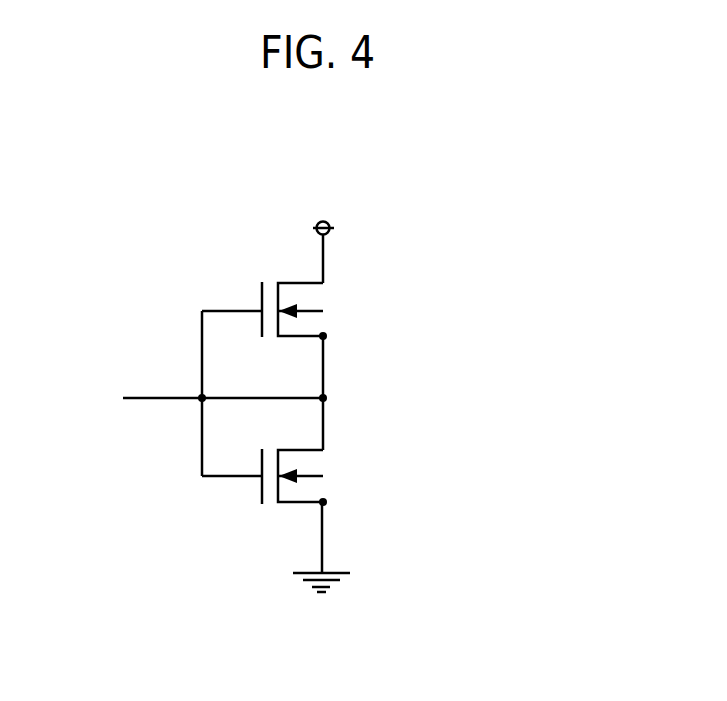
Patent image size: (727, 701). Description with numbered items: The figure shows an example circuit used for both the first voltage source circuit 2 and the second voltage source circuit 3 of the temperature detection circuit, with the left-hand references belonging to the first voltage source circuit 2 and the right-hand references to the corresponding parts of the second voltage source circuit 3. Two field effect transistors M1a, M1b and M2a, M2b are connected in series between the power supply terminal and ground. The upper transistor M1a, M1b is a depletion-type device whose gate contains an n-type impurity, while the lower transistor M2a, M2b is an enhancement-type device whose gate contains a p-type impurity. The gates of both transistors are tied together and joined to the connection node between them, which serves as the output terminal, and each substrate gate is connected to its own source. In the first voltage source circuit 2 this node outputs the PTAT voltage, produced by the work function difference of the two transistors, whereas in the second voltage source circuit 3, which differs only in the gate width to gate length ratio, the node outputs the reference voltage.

The first voltage source circuit 2 is at (297, 379).
The second voltage source circuit 3 is at (248, 394).
The field effect transistor M1a is at (316, 311).
The field effect transistor M1b is at (316, 311).
The field effect transistor M2a is at (316, 477).
The field effect transistor M2b is at (316, 477).